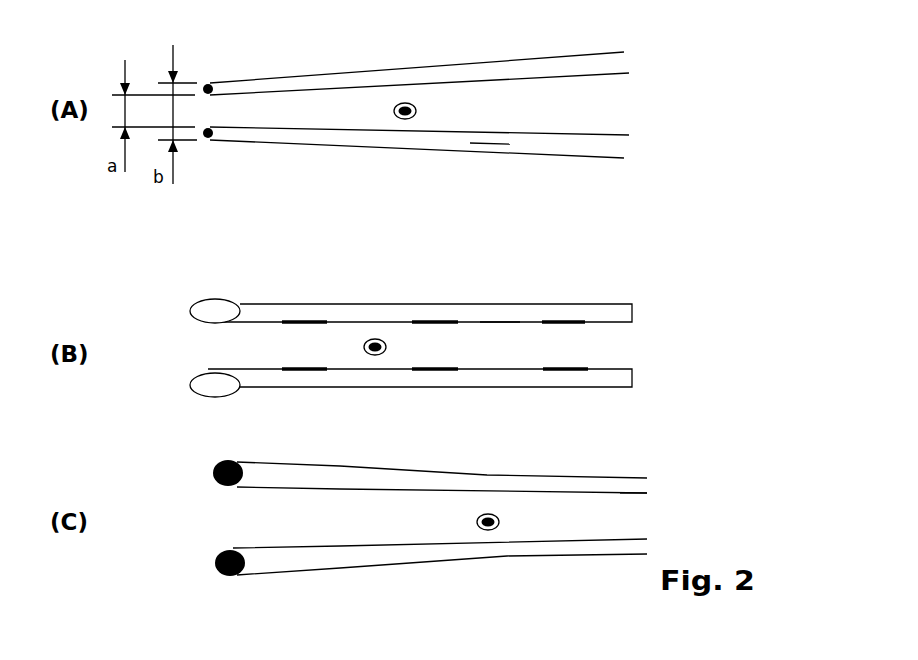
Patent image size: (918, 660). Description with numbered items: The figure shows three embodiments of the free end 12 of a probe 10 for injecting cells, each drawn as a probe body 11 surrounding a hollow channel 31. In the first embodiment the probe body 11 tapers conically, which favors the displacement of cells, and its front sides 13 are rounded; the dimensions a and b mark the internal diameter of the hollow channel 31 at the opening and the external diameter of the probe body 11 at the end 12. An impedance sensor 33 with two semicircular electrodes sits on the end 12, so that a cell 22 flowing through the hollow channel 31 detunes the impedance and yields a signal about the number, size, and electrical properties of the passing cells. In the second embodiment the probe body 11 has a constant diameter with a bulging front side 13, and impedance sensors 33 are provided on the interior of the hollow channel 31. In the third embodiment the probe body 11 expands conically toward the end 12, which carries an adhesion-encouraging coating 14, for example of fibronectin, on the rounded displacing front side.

The probe 10 is at (313, 72).
The hollow channel 31 is at (543, 118).
The probe body 11 is at (635, 483).
The free end 12 is at (209, 73).
The front side 13 is at (192, 390).
The adhesion-encouraging coating 14 is at (217, 568).
The cell 22 is at (489, 514).
The impedance sensor 33 is at (283, 369).